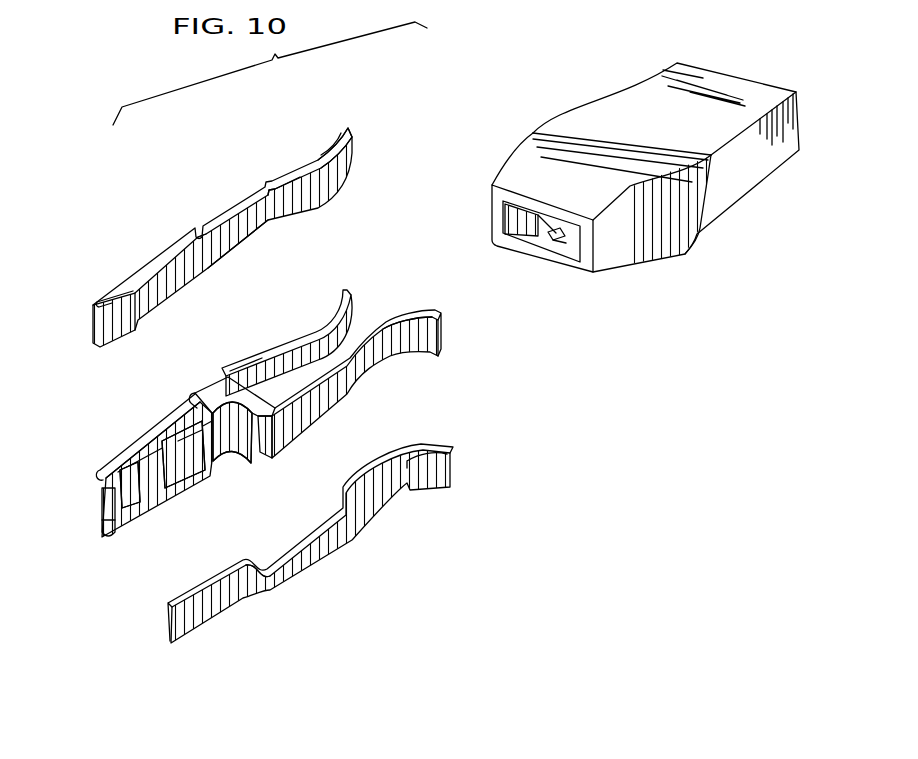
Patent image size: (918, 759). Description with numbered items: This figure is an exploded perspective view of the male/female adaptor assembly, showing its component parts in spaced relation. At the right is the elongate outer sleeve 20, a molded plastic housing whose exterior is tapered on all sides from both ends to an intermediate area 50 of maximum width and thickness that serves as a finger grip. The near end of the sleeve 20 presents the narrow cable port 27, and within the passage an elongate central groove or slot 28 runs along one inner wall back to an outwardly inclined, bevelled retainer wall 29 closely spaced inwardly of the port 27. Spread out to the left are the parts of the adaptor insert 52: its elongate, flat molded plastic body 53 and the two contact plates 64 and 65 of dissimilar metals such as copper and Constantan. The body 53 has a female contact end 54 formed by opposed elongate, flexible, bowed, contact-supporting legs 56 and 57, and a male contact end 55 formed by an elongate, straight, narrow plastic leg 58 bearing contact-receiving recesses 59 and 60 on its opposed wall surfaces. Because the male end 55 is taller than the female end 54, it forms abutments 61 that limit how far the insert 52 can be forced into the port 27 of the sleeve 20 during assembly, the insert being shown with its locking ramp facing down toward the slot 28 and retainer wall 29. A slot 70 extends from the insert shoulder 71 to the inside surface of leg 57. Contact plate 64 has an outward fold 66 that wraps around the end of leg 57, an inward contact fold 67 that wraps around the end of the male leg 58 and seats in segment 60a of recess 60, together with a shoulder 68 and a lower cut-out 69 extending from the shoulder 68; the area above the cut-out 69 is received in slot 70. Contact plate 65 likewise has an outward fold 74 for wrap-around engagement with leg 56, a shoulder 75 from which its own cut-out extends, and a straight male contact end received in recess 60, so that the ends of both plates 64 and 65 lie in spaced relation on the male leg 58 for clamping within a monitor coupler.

The outer sleeve 20 is at (645, 83).
The intermediate area 50 is at (542, 128).
The cable port 27 is at (500, 220).
The central groove or slot 28 is at (556, 236).
The bevelled retainer wall 29 is at (567, 237).
The adaptor insert 52 is at (133, 222).
The contact plate 64 is at (245, 198).
The outward fold 66 is at (327, 147).
The inward contact fold 67 is at (118, 333).
The shoulder 68 is at (193, 238).
The lower cut-out 69 is at (242, 217).
The molded plastic body 53 is at (328, 433).
The female contact end 54 is at (503, 353).
The contact-supporting leg 56 is at (392, 353).
The contact-supporting leg 57 is at (337, 310).
The abutments 61 is at (220, 392).
The slot 70 is at (245, 368).
The insert shoulder 71 is at (195, 407).
The male contact end 55 is at (120, 561).
The plastic leg 58 is at (153, 442).
The contact-receiving recess 59 is at (102, 507).
The contact-receiving recess 60 is at (203, 453).
The recess segment 60a is at (139, 494).
The contact plate 65 is at (215, 600).
The outward fold 74 is at (430, 487).
The shoulder 75 is at (248, 597).